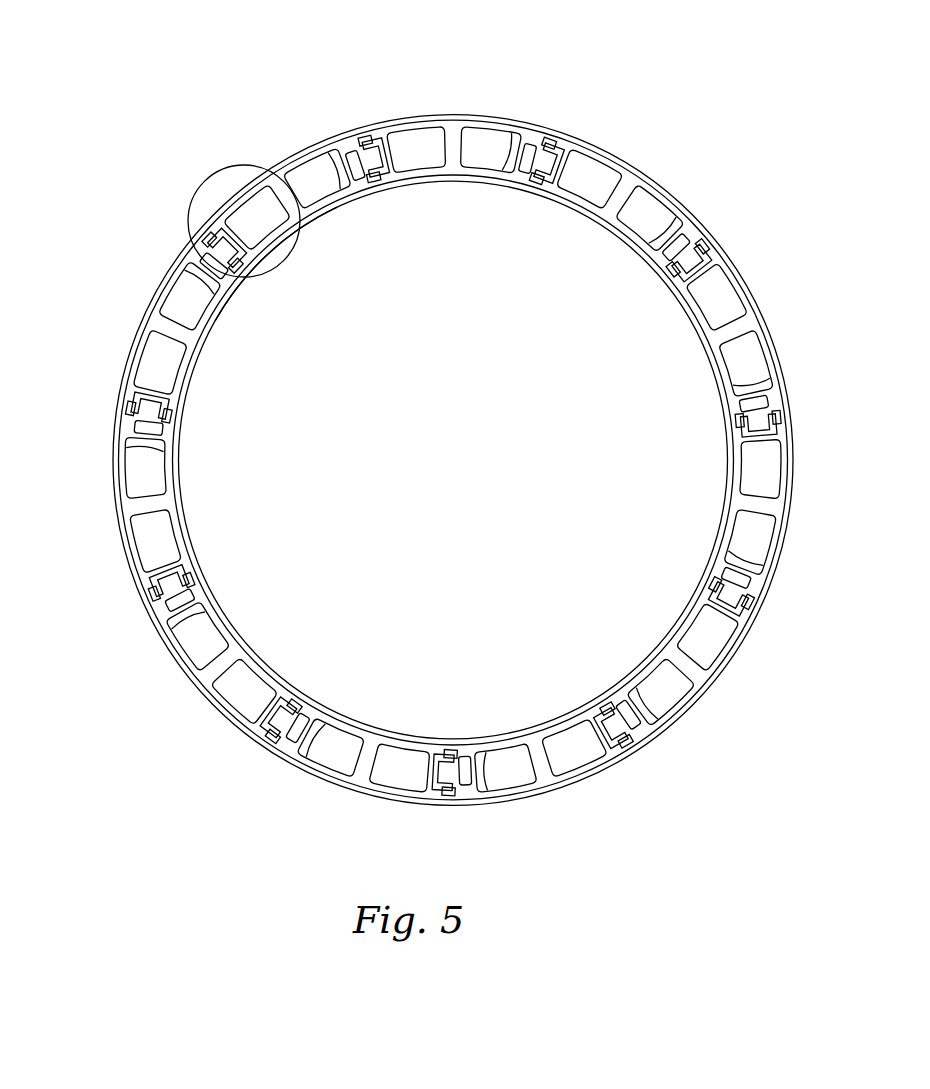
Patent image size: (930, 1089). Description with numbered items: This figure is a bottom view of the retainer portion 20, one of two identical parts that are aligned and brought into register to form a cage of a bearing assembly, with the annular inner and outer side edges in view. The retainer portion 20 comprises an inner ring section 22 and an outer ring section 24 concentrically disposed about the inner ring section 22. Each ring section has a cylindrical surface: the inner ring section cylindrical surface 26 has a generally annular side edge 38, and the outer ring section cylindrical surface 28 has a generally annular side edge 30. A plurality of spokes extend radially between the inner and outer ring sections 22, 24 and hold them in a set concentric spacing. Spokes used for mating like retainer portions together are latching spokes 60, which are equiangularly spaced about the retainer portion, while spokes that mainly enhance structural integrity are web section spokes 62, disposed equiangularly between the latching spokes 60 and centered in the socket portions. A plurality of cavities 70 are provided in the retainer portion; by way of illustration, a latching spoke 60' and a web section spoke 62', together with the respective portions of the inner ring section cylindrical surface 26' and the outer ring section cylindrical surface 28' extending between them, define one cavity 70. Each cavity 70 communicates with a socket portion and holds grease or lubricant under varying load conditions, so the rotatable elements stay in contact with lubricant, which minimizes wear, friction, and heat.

The retainer portion 20 is at (590, 104).
The inner ring section 22 is at (585, 217).
The outer ring section 24 is at (633, 168).
The inner ring section cylindrical surface 26 is at (453, 460).
The outer ring section cylindrical surface 28 is at (719, 229).
The annular side edge 30 is at (762, 317).
The annular side edge 38 is at (700, 340).
The latching spoke 60 is at (628, 717).
The web section spoke 62 is at (695, 640).
The cavity 70 is at (173, 303).
The inner ring section cylindrical surface portion 26' is at (276, 269).
The outer ring section cylindrical surface portion 28' is at (228, 182).
The latching spoke 60' is at (182, 247).
The web section spoke 62' is at (320, 213).